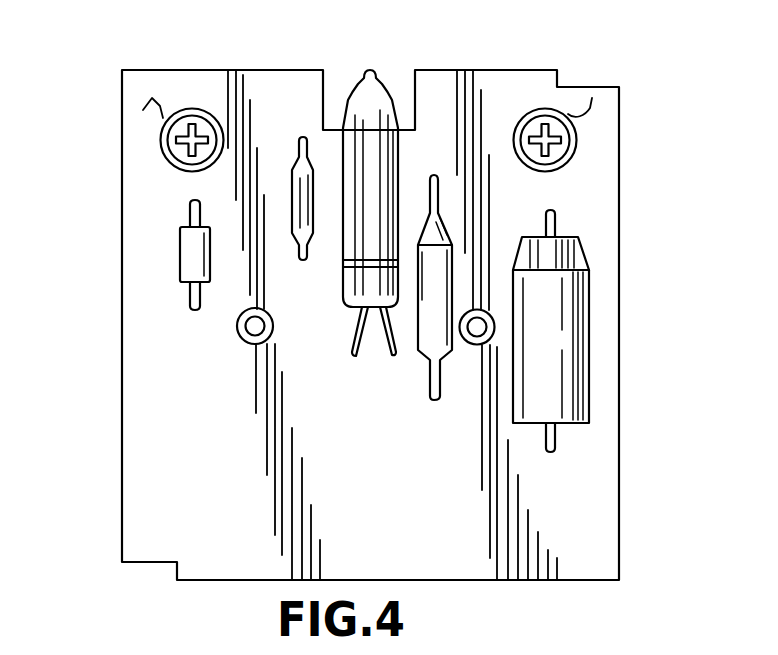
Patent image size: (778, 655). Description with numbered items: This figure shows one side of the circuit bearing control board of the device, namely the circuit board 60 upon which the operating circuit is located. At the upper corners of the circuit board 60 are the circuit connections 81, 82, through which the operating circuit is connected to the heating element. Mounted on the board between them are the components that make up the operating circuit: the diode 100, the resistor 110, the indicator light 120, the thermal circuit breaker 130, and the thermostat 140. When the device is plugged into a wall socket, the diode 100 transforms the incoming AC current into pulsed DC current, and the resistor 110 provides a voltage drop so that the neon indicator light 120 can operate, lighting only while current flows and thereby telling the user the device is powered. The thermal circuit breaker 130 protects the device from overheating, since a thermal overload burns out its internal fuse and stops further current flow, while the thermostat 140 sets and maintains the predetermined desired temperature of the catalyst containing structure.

The circuit board 60 is at (122, 372).
The circuit connection 81 is at (161, 119).
The circuit connection 82 is at (568, 116).
The diode 100 is at (190, 245).
The resistor 110 is at (300, 168).
The indicator light 120 is at (374, 72).
The thermal circuit breaker 130 is at (430, 333).
The thermostat 140 is at (568, 318).